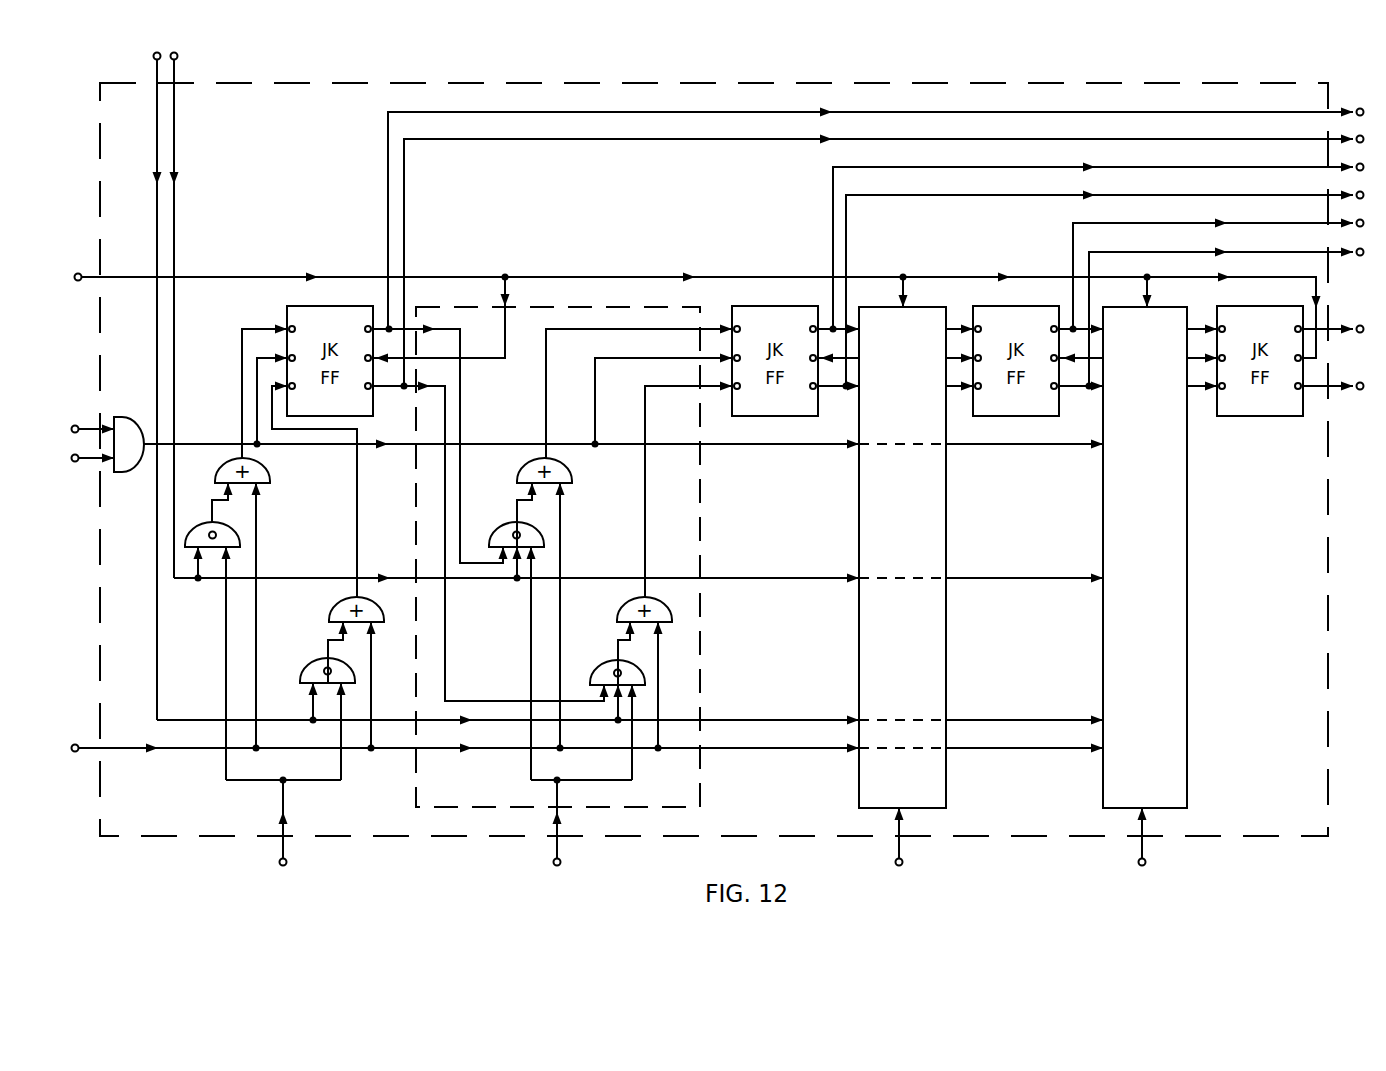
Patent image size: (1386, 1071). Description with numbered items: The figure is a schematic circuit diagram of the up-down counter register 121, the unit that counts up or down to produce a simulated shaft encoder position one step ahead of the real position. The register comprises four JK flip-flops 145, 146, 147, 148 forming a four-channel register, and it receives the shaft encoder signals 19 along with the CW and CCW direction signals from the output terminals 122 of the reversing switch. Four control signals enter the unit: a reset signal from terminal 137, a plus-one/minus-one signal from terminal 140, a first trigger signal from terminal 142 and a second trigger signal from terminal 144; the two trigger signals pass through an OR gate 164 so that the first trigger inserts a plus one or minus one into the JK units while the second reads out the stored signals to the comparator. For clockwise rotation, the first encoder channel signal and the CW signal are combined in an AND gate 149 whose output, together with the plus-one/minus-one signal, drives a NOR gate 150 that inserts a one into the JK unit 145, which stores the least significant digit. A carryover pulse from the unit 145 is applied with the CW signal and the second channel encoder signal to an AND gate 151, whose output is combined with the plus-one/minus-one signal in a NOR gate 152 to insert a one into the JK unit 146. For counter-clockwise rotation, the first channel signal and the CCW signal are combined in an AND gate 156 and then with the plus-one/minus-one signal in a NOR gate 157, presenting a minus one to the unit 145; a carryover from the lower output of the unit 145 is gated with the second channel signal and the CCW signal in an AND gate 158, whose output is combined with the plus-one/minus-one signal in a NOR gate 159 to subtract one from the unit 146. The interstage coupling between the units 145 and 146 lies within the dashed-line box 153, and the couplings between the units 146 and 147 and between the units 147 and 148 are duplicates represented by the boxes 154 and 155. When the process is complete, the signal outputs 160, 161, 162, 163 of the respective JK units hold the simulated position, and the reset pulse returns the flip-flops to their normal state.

The up-down counter register 121 is at (985, 83).
The output terminals of the reversing switch 122 is at (160, 52).
The output terminal of AND gate (reset signal) 137 is at (78, 273).
The output terminal (+1/−1 signal) 140 is at (75, 752).
The output terminal (first trigger signal) 142 is at (74, 425).
The output terminal (second trigger signal) 144 is at (76, 462).
The OR gate 164 is at (142, 428).
The JK flip-flop 145 is at (296, 306).
The JK flip-flop 146 is at (758, 306).
The JK flip-flop 147 is at (1000, 306).
The JK flip-flop 148 is at (1250, 306).
The AND gate 149 is at (199, 520).
The NOR gate 150 is at (268, 468).
The AND gate 151 is at (502, 522).
The NOR gate 152 is at (574, 466).
The dashed-line box (interstage coupling) 153 is at (700, 518).
The interstage coupling unit 154 is at (946, 506).
The interstage coupling unit 155 is at (1187, 513).
The AND gate 156 is at (302, 675).
The NOR gate 157 is at (331, 605).
The AND gate 158 is at (600, 672).
The NOR gate 159 is at (624, 606).
The signal output of JK unit 145 160 is at (1363, 112).
The signal output of JK unit 146 161 is at (1363, 167).
The signal output of JK unit 147 162 is at (1363, 223).
The signal output of JK unit 148 163 is at (1360, 334).
The shaft encoder signals 19 is at (693, 837).